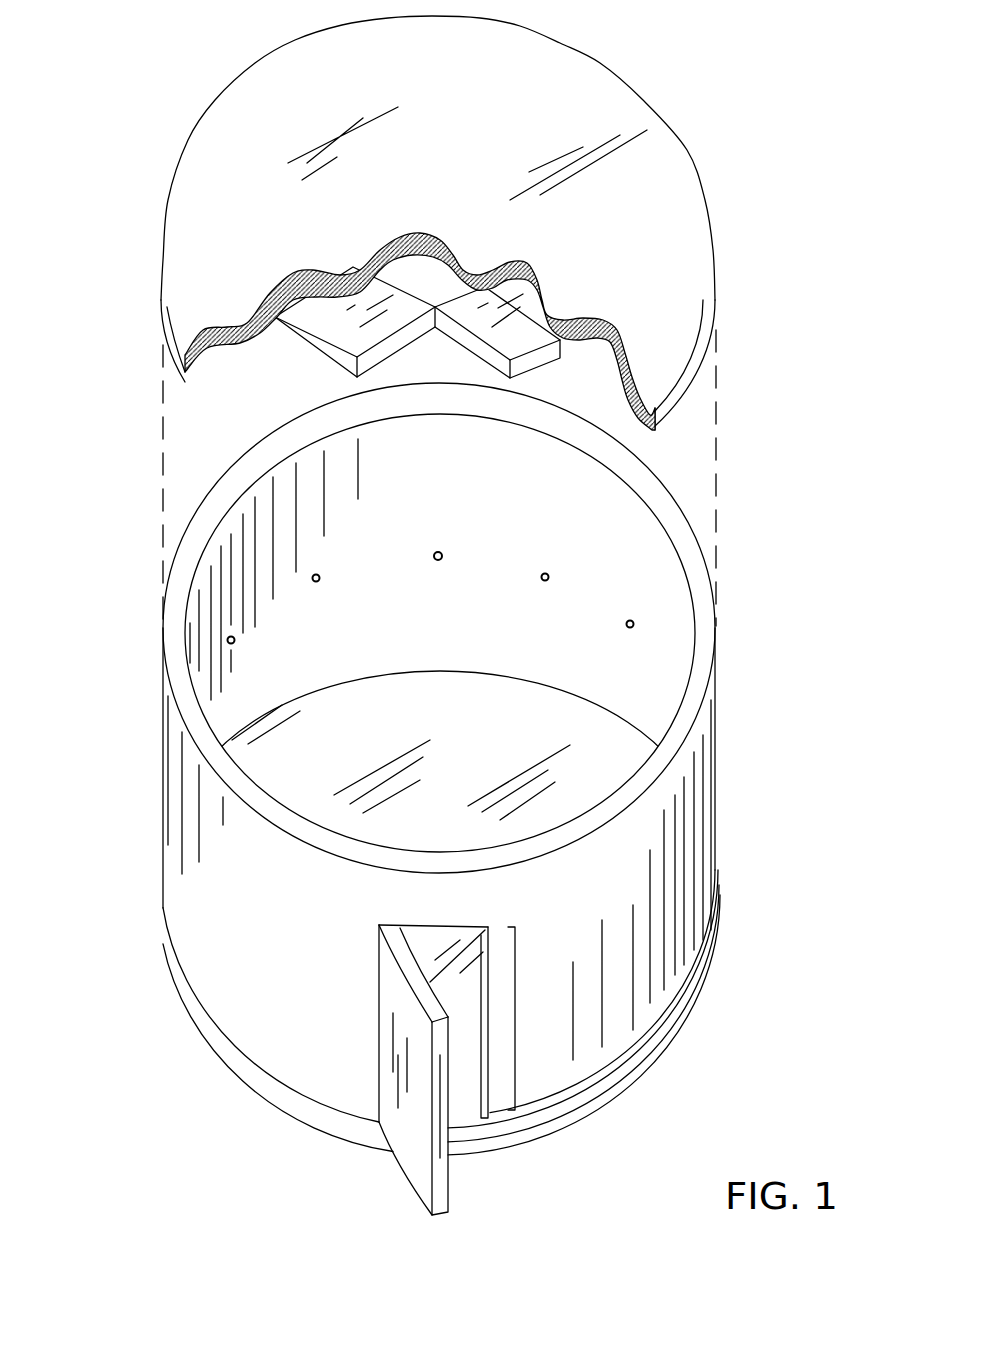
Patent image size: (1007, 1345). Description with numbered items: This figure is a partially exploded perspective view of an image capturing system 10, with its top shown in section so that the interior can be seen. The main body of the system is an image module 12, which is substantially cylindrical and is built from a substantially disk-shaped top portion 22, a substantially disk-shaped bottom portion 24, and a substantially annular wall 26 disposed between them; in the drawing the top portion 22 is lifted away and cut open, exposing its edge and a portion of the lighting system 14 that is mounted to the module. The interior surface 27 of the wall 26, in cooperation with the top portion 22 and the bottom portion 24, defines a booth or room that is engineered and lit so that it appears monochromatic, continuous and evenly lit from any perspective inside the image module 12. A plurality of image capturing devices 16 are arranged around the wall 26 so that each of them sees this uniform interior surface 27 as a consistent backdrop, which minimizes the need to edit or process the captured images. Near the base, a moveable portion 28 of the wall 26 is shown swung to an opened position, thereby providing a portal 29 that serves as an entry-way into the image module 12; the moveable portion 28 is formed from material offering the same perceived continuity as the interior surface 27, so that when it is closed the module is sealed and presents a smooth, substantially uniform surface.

The image capturing system 10 is at (734, 112).
The image module 12 is at (431, 721).
The lighting system 14 is at (322, 342).
The image capturing devices 16 is at (634, 622).
The top portion 22 is at (237, 160).
The bottom portion 24 is at (637, 1083).
The wall 26 is at (165, 800).
The interior surface 27 is at (442, 480).
The moveable portion 28 is at (406, 1130).
The portal 29 is at (515, 1020).